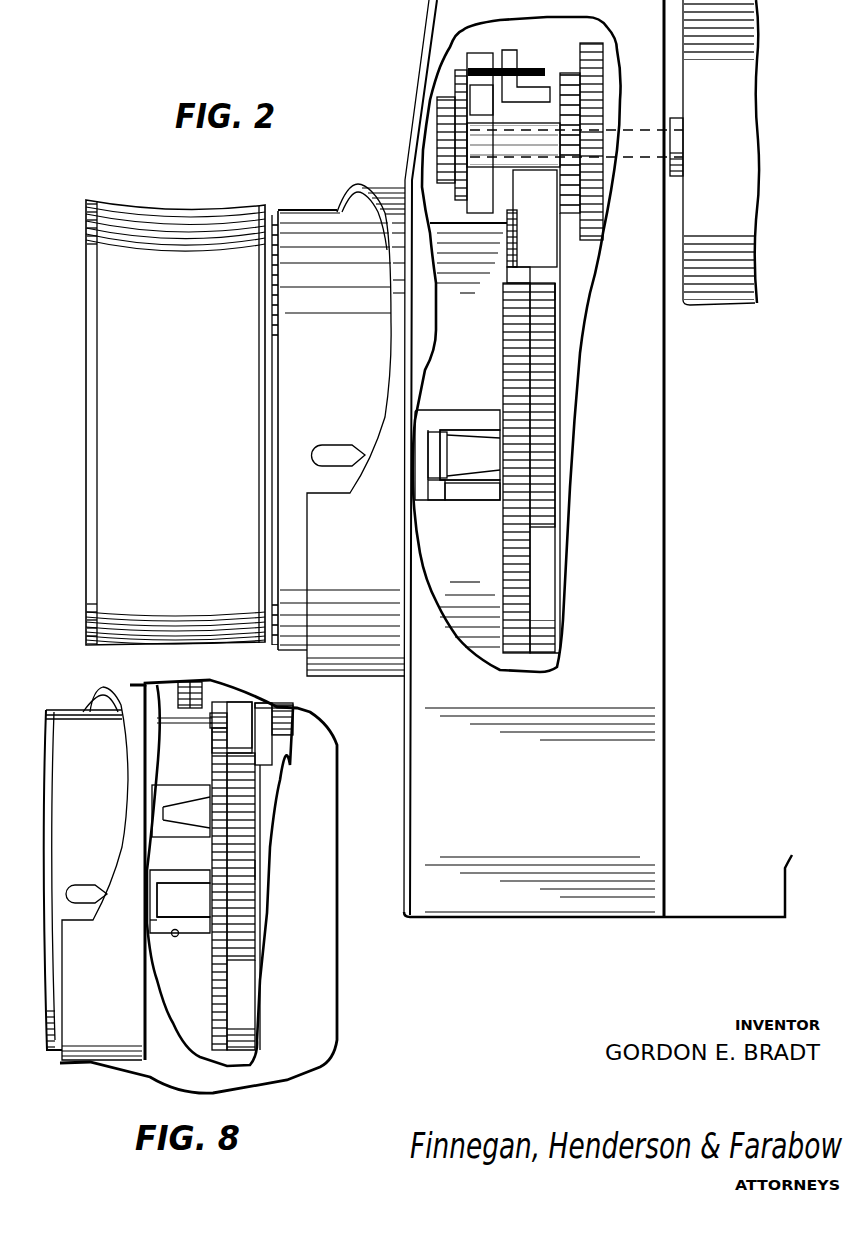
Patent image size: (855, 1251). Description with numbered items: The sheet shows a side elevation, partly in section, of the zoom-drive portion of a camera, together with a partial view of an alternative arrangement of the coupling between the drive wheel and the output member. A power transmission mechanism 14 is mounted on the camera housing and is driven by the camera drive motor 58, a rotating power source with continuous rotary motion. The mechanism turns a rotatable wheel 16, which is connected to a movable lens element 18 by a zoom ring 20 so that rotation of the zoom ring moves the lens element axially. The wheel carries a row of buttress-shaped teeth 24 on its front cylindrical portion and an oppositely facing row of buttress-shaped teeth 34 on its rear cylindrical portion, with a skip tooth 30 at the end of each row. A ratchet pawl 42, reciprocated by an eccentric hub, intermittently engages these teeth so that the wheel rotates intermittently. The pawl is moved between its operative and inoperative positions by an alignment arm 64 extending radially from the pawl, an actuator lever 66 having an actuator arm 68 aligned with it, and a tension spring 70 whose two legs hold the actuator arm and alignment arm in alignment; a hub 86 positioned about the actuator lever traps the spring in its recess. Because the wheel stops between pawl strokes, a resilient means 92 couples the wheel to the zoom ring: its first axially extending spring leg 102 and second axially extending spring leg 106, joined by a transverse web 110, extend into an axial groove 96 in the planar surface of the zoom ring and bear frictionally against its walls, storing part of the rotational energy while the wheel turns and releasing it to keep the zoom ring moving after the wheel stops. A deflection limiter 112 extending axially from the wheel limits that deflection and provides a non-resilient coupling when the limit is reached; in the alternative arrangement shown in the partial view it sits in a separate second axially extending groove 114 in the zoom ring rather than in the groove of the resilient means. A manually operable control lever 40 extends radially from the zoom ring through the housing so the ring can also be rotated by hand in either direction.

In FIG. 2, the power transmission mechanism 14 is at (574, 272).
In FIG. 8, the power transmission mechanism 14 is at (263, 760).
In FIG. 2, the rotatable wheel 16 is at (540, 578).
In FIG. 8, the rotatable wheel 16 is at (240, 1000).
In FIG. 2, the movable lens element 18 is at (85, 447).
In FIG. 2, the zoom ring 20 is at (445, 598).
In FIG. 8, the zoom ring 20 is at (183, 1020).
In FIG. 2, the buttress-shaped teeth 24 is at (510, 545).
In FIG. 8, the buttress-shaped teeth 24 is at (217, 950).
In FIG. 2, the skip tooth 30 is at (545, 527).
In FIG. 8, the skip tooth 30 is at (245, 948).
In FIG. 2, the buttress-shaped teeth 34 is at (545, 423).
In FIG. 8, the buttress-shaped teeth 34 is at (243, 873).
In FIG. 2, the manually operable control lever 40 is at (337, 450).
In FIG. 8, the manually operable control lever 40 is at (82, 893).
In FIG. 2, the ratchet pawl 42 is at (545, 250).
In FIG. 8, the ratchet pawl 42 is at (243, 737).
In FIG. 2, the camera drive motor 58 is at (745, 207).
In FIG. 2, the alignment arm 64 is at (510, 60).
In FIG. 2, the actuator lever 66 is at (478, 98).
In FIG. 2, the actuator arm 68 is at (455, 63).
In FIG. 2, the tension spring 70 is at (543, 72).
In FIG. 2, the hub 86 is at (448, 130).
In FIG. 2, the resilient means 92 is at (440, 488).
In FIG. 8, the resilient means 92 is at (147, 923).
In FIG. 8, the axial groove 96 is at (164, 947).
In FIG. 2, the first axially extending spring leg 102 is at (480, 488).
In FIG. 8, the first axially extending spring leg 102 is at (213, 920).
In FIG. 2, the second axially extending spring leg 106 is at (468, 425).
In FIG. 8, the second axially extending spring leg 106 is at (188, 880).
In FIG. 2, the transverse web 110 is at (418, 442).
In FIG. 8, the transverse web 110 is at (150, 875).
In FIG. 2, the deflection limiter 112 is at (442, 448).
In FIG. 8, the deflection limiter 112 is at (190, 810).
In FIG. 8, the second axially extending groove 114 is at (158, 819).